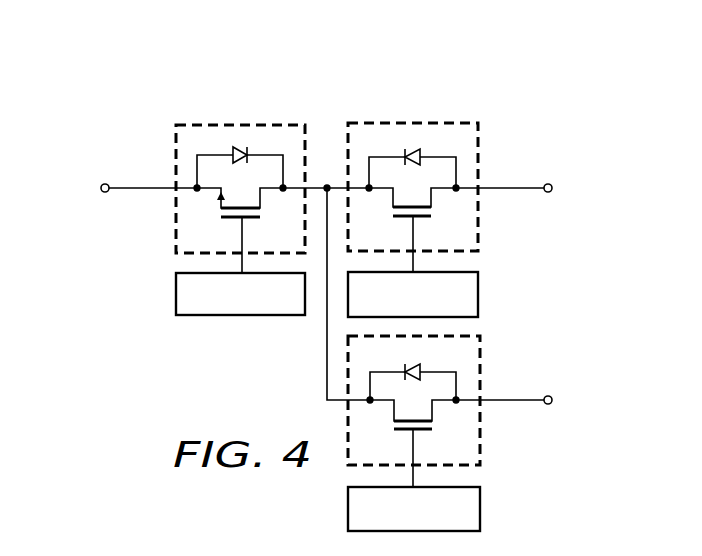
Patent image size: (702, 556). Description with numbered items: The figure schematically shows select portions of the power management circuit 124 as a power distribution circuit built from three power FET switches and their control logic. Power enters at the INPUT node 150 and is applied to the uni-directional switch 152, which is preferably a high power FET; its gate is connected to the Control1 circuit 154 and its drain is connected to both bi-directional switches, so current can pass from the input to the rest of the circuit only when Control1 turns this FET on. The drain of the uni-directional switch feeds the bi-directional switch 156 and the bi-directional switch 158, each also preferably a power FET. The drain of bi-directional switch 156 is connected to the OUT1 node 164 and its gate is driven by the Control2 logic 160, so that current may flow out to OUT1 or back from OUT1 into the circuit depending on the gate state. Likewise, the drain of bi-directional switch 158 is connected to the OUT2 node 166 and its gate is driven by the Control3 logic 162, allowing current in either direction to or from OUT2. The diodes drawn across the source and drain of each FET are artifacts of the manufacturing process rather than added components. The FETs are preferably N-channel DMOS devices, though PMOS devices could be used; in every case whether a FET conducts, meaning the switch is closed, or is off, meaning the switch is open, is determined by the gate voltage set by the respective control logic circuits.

The power management circuit 124 is at (533, 62).
The INPUT node 150 is at (105, 184).
The uni-directional switch 152 is at (239, 124).
The Control1 circuit 154 is at (176, 293).
The bi-directional switch 156 is at (414, 122).
The bi-directional switch 158 is at (481, 438).
The Control2 logic 160 is at (479, 290).
The Control3 logic 162 is at (481, 507).
The OUT1 node 164 is at (549, 182).
The OUT2 node 166 is at (550, 394).